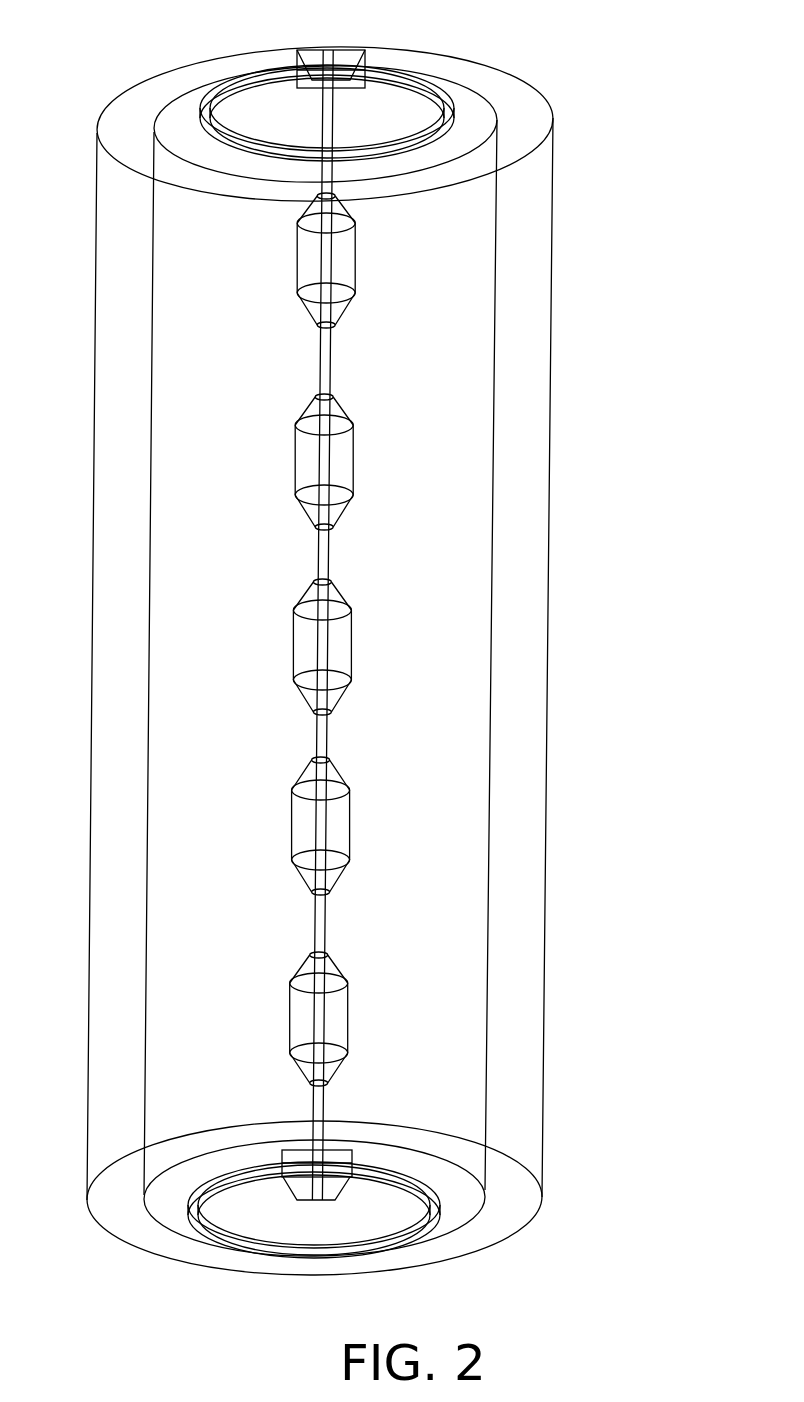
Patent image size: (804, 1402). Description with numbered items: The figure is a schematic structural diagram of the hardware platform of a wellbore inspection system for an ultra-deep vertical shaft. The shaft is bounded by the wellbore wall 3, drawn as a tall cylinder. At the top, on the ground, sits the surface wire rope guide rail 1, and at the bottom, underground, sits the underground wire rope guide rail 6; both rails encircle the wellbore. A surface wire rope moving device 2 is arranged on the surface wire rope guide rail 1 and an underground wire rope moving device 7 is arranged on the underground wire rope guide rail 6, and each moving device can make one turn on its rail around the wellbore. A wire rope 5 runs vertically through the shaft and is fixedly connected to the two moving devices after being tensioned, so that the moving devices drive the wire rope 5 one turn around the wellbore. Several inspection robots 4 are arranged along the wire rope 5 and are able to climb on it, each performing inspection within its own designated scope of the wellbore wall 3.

The surface wire rope guide rail 1 is at (436, 123).
The surface wire rope moving device 2 is at (333, 47).
The wellbore wall 3 is at (497, 317).
The inspection robots 4 is at (353, 488).
The wire rope 5 is at (328, 740).
The underground wire rope guide rail 6 is at (437, 1208).
The underground wire rope moving device 7 is at (350, 1157).